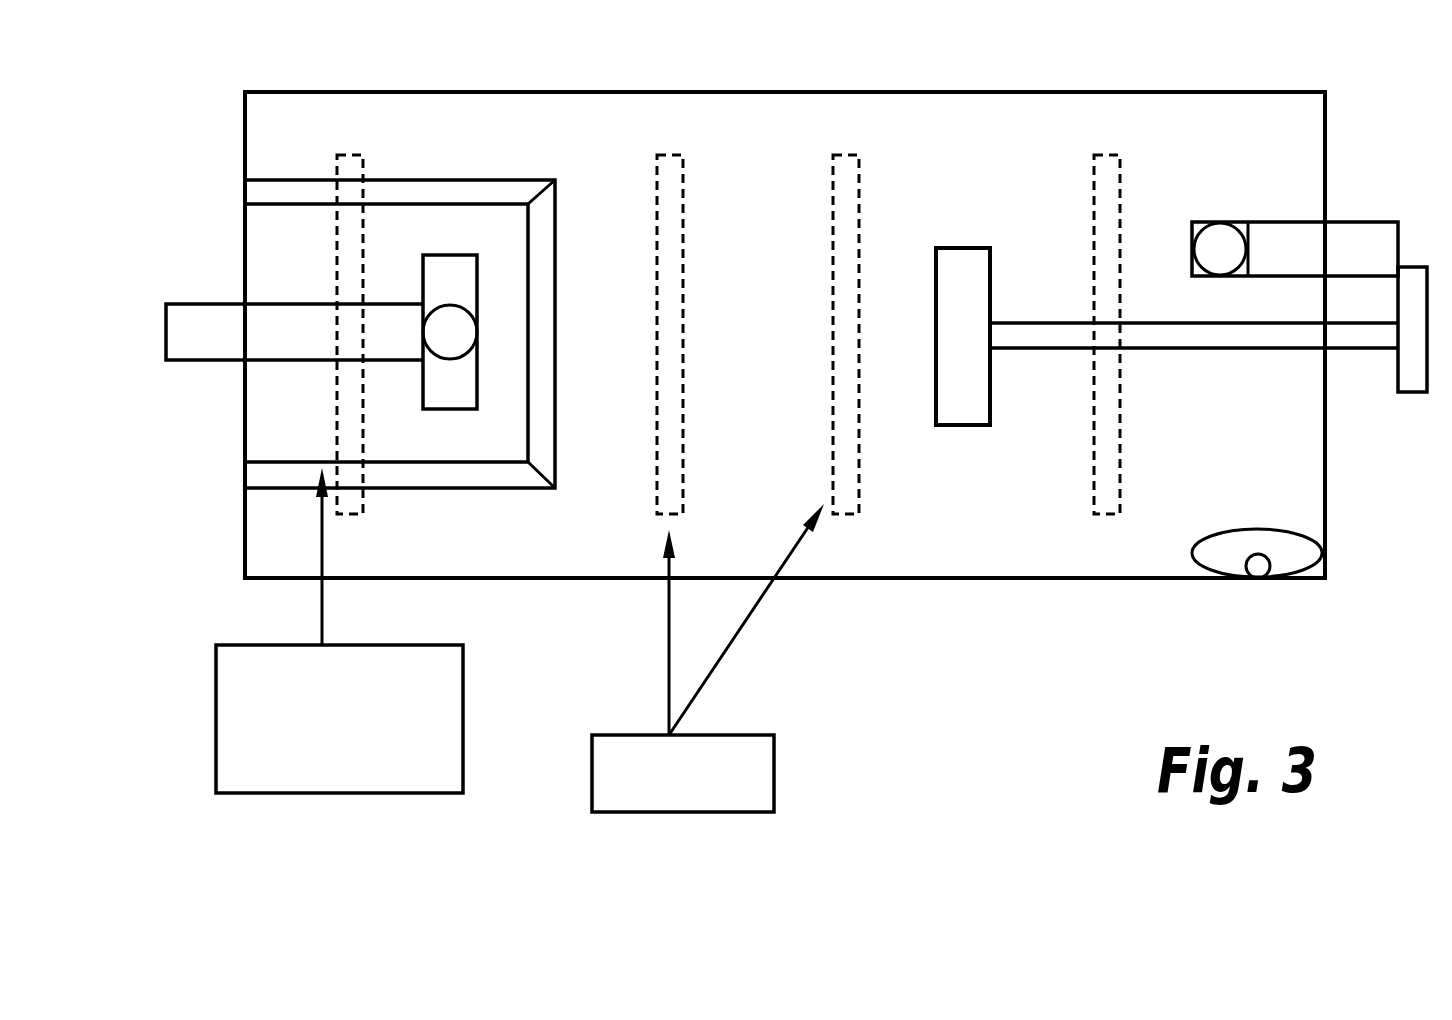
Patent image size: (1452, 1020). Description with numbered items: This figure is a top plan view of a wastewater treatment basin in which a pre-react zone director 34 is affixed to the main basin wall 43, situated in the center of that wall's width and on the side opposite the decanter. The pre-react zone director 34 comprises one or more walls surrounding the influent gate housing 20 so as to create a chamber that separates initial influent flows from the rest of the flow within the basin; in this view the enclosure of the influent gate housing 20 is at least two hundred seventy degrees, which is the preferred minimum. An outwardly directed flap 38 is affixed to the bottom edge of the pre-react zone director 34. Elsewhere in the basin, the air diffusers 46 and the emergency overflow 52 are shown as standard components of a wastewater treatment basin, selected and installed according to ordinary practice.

The main basin wall 43 is at (245, 124).
The pre-react zone director 34 is at (452, 160).
The influent gate housing 20 is at (477, 291).
The flap 38 is at (333, 793).
The air diffusers 46 is at (774, 778).
The emergency overflow 52 is at (1374, 235).